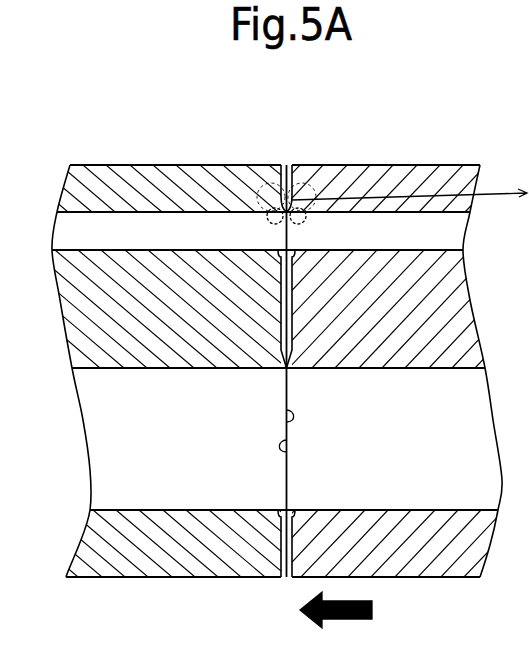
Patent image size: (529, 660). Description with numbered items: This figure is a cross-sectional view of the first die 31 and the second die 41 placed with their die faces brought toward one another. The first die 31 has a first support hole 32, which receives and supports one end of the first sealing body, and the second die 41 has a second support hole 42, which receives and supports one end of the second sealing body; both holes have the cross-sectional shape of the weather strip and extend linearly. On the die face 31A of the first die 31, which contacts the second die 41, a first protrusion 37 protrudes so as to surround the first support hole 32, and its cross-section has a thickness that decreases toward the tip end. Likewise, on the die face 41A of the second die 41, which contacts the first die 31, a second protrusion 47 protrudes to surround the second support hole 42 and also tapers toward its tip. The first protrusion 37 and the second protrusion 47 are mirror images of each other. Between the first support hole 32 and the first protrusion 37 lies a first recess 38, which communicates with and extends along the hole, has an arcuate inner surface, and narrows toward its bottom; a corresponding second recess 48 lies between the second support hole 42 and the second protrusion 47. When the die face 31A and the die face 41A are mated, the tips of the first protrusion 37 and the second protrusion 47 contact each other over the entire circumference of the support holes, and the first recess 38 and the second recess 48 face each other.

The first die 31 is at (187, 165).
The second die 41 is at (383, 165).
The first protrusion 37 is at (278, 196).
The second protrusion 47 is at (296, 196).
The first recess 38 is at (270, 221).
The second recess 48 is at (303, 221).
The first support hole 32 is at (60, 215).
The second support hole 42 is at (467, 215).
The die face 31A is at (278, 434).
The die face 41A is at (292, 446).